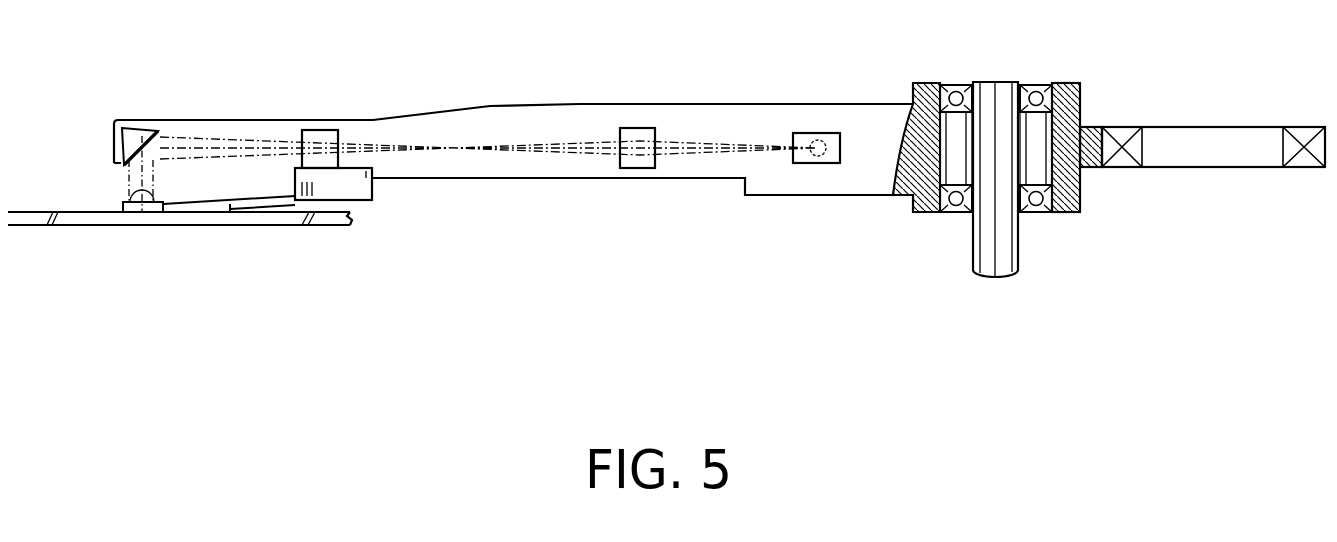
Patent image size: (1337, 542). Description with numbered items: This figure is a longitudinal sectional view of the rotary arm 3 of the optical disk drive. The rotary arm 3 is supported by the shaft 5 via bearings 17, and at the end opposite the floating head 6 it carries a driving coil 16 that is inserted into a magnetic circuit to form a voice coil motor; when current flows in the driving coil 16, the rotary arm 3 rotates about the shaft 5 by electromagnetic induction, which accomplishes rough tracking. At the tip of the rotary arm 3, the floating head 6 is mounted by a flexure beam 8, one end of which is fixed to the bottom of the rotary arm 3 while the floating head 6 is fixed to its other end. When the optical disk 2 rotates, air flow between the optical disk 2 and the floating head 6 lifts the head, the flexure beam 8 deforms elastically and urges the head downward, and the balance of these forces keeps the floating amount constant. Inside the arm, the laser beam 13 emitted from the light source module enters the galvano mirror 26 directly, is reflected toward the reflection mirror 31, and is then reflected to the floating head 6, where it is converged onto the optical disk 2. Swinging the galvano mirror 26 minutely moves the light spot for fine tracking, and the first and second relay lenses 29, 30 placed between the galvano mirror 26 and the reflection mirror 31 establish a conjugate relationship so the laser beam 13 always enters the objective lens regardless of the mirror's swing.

The optical disk 2 is at (100, 217).
The rotary arm 3 is at (513, 97).
The shaft 5 is at (1003, 88).
The floating head 6 is at (88, 197).
The flexure beam 8 is at (230, 208).
The laser beam 13 is at (234, 126).
The driving coil 16 is at (1130, 126).
The bearings 17 is at (953, 86).
The galvano mirror 26 is at (817, 132).
The first relay lens 29 is at (640, 163).
The second relay lens 30 is at (322, 128).
The reflection mirror 31 is at (133, 136).